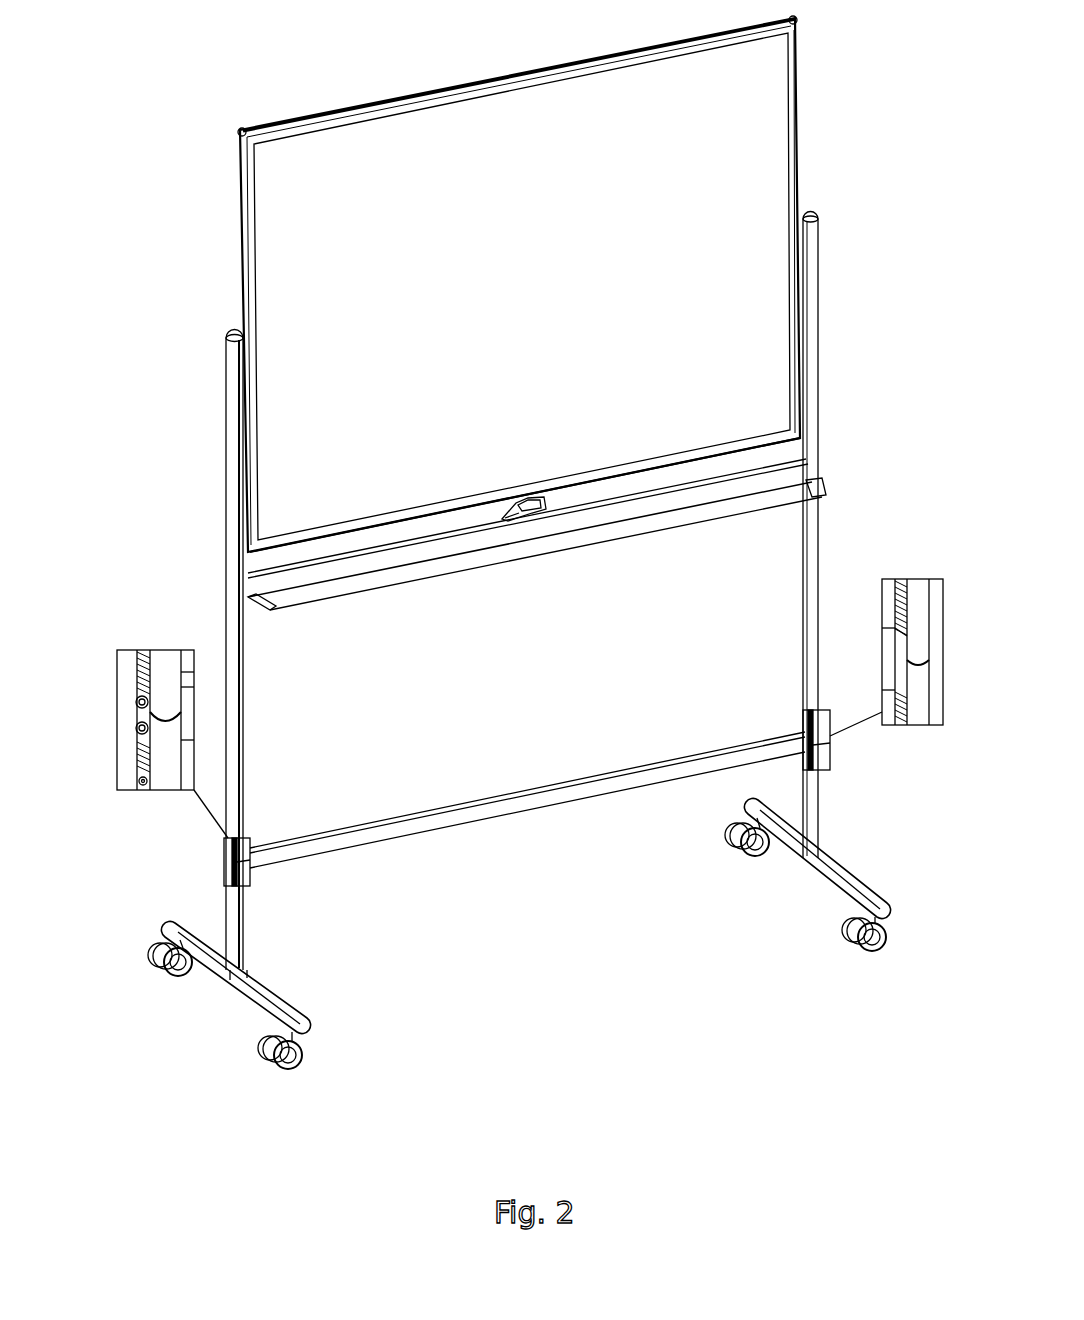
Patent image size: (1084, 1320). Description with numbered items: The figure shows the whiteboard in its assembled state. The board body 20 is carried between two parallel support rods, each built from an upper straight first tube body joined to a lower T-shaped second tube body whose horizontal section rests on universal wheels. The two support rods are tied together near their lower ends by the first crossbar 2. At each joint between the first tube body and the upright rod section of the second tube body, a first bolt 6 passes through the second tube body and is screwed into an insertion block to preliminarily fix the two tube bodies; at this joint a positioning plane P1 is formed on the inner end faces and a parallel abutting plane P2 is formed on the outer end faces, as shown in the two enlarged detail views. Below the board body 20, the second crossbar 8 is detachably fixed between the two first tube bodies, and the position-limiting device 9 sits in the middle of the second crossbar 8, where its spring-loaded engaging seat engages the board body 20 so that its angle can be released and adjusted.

The board body 20 is at (505, 99).
The second crossbar 8 is at (347, 565).
The position-limiting device 9 is at (526, 511).
The first crossbar 2 is at (501, 813).
The first bolt 6 is at (137, 782).
The positioning plane P1 is at (902, 580).
The abutting plane P2 is at (133, 680).